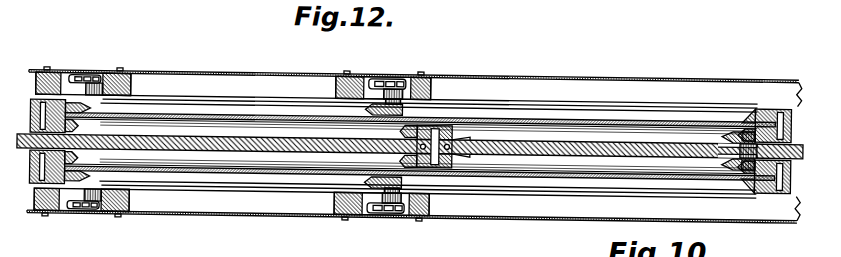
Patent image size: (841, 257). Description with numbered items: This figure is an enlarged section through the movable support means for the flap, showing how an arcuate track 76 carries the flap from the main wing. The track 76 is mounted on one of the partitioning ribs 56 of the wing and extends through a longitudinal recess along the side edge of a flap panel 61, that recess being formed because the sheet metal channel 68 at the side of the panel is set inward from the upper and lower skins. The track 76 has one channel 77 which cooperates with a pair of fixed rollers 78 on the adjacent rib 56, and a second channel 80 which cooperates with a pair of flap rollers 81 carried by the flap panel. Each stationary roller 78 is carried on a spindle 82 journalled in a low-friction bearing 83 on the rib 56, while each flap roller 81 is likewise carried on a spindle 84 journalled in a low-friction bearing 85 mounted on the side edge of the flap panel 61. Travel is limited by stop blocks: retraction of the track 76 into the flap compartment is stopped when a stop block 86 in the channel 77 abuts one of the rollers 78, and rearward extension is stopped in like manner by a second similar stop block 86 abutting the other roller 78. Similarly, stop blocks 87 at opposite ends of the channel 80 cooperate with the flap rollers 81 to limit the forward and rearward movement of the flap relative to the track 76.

The partitioning rib 56 is at (663, 139).
The flap panel 61 is at (209, 86).
The sheet metal channel 68 is at (165, 68).
The arcuate track 76 is at (618, 102).
The channel 77 is at (570, 125).
The fixed roller 78 is at (465, 118).
The second channel 80 is at (287, 111).
The flap roller 81 is at (98, 82).
The spindle 82 is at (442, 119).
The low-friction bearing 83 is at (470, 134).
The spindle 84 is at (386, 200).
The low-friction bearing 85 is at (84, 80).
The stop block 86 is at (30, 120).
The stop block 87 is at (60, 105).